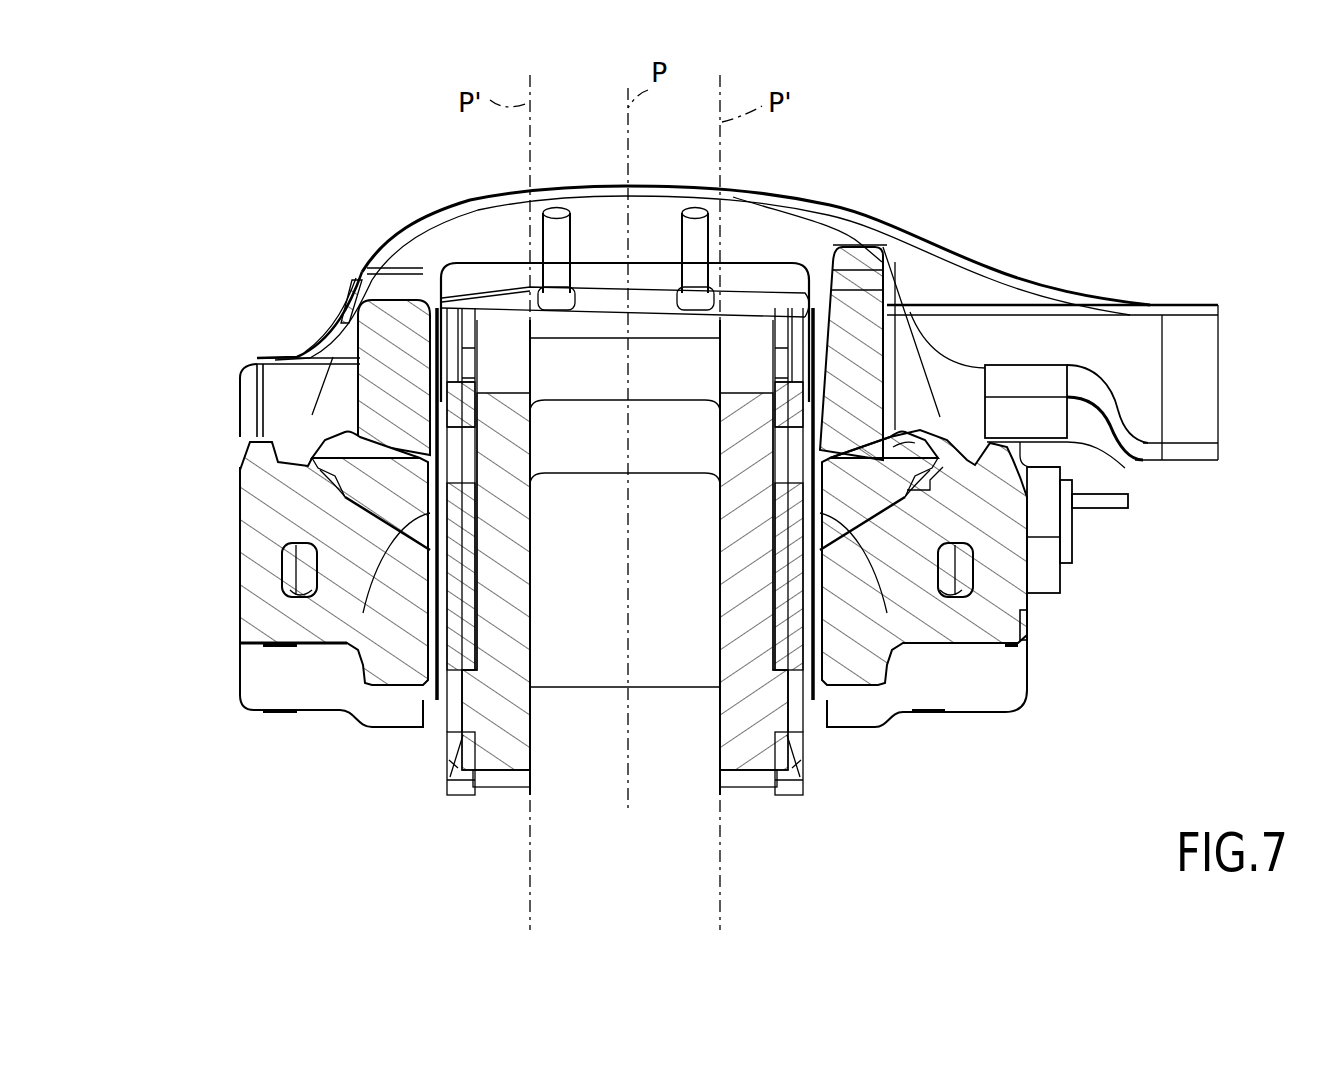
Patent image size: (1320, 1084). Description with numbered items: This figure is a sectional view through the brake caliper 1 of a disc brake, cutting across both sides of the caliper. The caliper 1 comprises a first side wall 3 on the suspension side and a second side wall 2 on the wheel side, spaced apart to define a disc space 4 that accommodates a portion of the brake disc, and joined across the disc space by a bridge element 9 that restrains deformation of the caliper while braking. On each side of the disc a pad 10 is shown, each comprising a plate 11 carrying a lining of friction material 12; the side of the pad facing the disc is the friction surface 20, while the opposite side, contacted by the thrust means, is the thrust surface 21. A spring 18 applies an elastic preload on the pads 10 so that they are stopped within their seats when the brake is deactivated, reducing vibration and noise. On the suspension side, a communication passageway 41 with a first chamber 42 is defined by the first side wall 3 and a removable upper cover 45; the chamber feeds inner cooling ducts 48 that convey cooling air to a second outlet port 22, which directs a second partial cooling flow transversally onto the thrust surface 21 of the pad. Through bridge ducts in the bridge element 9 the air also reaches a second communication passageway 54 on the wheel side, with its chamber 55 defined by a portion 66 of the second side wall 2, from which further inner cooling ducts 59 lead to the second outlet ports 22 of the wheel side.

The brake caliper 1 is at (1058, 160).
The second side wall 2 is at (257, 575).
The first side wall 3 is at (1005, 567).
The disc space 4 is at (643, 752).
The bridge element 9 is at (640, 215).
The pad 10 is at (503, 748).
The plate 11 is at (462, 762).
The lining of friction material 12 is at (497, 732).
The spring 18 is at (700, 228).
The friction surface 20 is at (532, 702).
The thrust surface 21 is at (446, 736).
The second outlet port 22 is at (393, 497).
The communication passageway 41 is at (1027, 500).
The first chamber 42 is at (1050, 487).
The upper cover 45 is at (957, 410).
The inner cooling ducts 48 is at (1022, 655).
The second communication passageway 54 is at (330, 442).
The chamber 55 is at (357, 450).
The inner cooling ducts 59 is at (290, 648).
The portion of the second side wall 66 is at (272, 393).